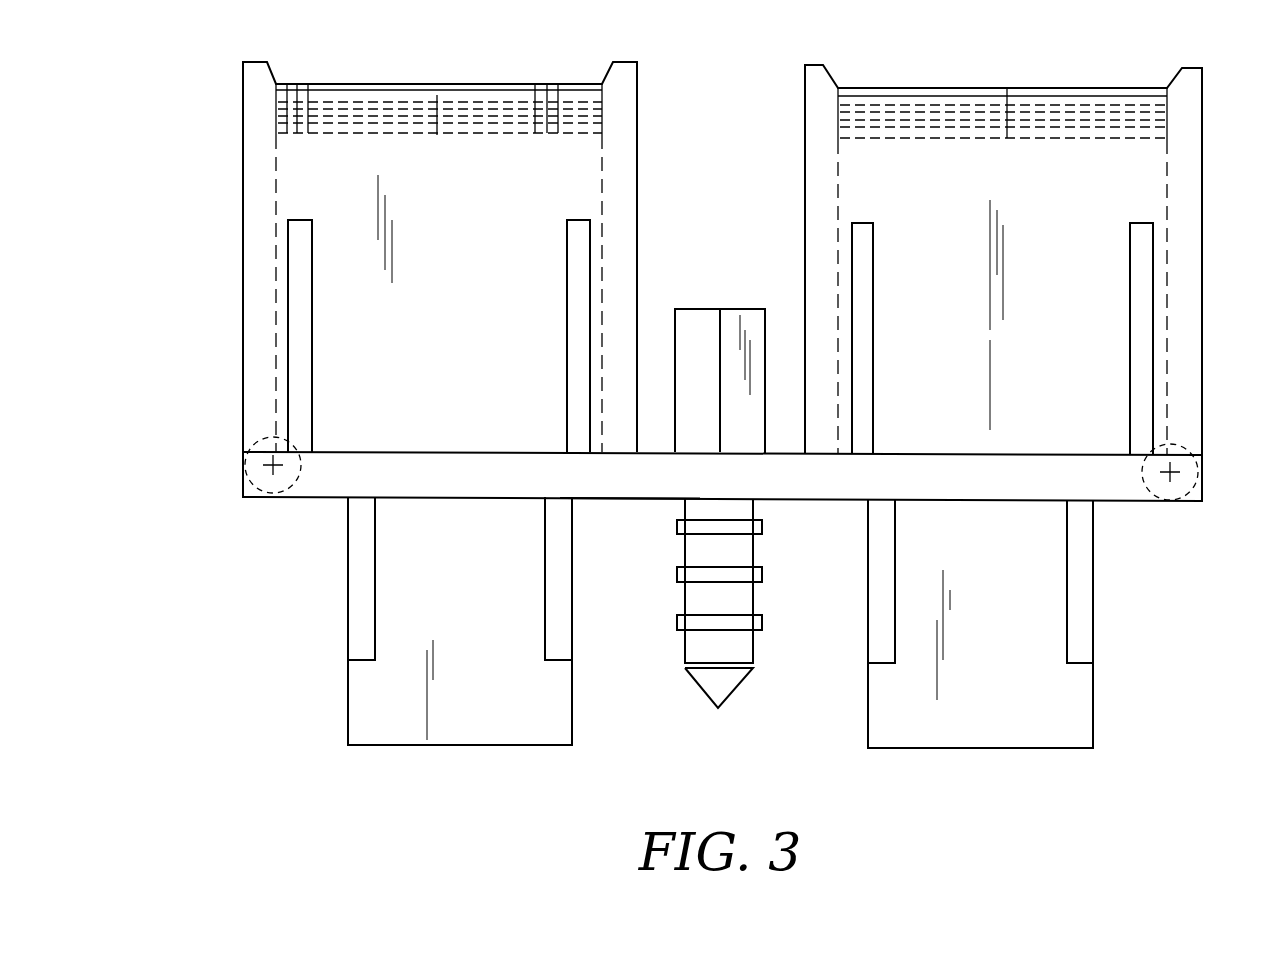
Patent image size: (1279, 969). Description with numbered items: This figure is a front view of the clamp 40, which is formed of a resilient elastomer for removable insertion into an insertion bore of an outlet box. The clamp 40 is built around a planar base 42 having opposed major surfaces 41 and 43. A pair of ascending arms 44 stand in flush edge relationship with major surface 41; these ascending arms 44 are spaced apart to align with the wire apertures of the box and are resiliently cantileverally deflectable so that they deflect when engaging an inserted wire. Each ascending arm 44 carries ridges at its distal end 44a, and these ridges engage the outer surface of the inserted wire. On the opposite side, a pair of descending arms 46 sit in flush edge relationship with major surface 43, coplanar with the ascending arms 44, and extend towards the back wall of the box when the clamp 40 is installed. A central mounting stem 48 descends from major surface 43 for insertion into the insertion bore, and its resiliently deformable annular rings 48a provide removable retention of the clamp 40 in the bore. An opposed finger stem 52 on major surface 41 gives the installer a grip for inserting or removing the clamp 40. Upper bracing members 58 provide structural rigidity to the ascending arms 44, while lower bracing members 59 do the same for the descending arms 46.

The clamp 40 is at (880, 33).
The major surface 41 is at (452, 452).
The planar base 42 is at (328, 473).
The major surface 43 is at (645, 499).
The ascending arms 44 is at (243, 193).
The distal end 44a is at (402, 84).
The descending arms 46 is at (487, 746).
The central mounting stem 48 is at (727, 700).
The annular rings 48a is at (677, 624).
The finger stem 52 is at (723, 309).
The upper bracing members 58 is at (862, 248).
The lower bracing members 59 is at (868, 593).